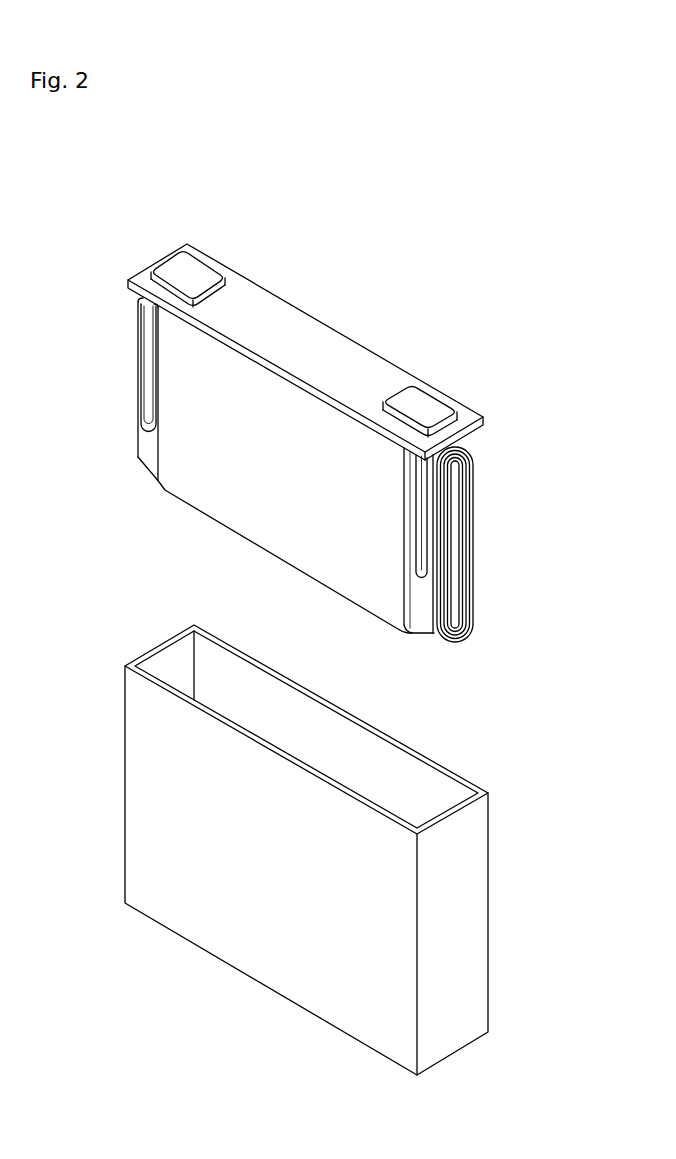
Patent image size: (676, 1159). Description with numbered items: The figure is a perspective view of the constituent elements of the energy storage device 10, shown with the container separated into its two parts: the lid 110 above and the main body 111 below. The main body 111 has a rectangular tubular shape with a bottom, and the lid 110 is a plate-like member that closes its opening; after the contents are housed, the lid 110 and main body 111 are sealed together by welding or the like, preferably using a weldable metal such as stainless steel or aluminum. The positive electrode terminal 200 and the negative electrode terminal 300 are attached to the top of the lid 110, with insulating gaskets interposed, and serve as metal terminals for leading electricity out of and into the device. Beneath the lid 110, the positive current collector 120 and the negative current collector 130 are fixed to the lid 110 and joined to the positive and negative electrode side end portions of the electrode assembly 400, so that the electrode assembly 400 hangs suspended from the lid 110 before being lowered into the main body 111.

The energy storage device 10 is at (487, 211).
The lid 110 is at (313, 335).
The main body 111 is at (475, 908).
The positive current collector 120 is at (420, 518).
The negative current collector 130 is at (144, 359).
The positive electrode terminal 200 is at (428, 403).
The negative electrode terminal 300 is at (195, 270).
The electrode assembly 400 is at (476, 548).